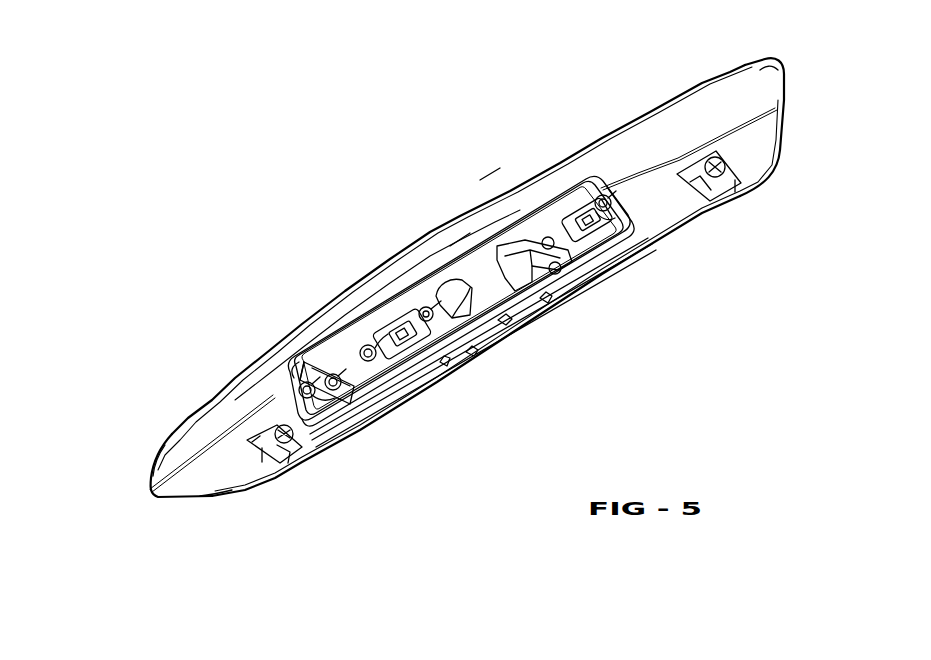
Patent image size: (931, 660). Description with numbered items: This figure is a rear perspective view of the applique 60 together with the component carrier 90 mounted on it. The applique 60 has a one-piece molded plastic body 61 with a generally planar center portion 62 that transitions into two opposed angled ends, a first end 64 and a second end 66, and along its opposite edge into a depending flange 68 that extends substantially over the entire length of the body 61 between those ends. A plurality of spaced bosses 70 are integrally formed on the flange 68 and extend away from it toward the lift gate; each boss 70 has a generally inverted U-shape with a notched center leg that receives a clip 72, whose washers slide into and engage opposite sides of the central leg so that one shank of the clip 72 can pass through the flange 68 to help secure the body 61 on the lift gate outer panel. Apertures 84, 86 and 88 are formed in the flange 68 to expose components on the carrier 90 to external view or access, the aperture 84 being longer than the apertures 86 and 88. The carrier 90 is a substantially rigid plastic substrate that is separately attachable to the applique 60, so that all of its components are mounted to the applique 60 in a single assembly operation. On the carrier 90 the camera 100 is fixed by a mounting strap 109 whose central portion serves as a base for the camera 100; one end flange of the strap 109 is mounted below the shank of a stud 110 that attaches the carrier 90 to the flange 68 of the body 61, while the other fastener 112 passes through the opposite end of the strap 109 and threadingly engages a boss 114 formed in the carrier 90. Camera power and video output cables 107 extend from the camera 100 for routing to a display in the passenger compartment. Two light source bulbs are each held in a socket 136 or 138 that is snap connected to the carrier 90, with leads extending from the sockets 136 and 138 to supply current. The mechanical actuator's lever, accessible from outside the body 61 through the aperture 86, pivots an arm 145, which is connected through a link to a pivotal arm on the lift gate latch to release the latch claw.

The applique 60 is at (487, 178).
The body 61 is at (457, 243).
The center portion 62 is at (656, 106).
The first end 64 is at (752, 82).
The second end 66 is at (158, 445).
The flange 68 is at (227, 483).
The bosses 70 is at (291, 459).
The clip 72 is at (287, 355).
The aperture 84 is at (420, 377).
The aperture 86 is at (503, 318).
The aperture 88 is at (577, 270).
The component carrier 90 is at (362, 349).
The camera 100 is at (337, 420).
The camera power and video output cables 107 is at (367, 410).
The mounting strap 109 is at (320, 430).
The stud 110 is at (287, 392).
The fastener 112 is at (333, 368).
The boss 114 is at (349, 345).
The socket 136 is at (472, 350).
The socket 138 is at (607, 227).
The arm 145 is at (520, 252).